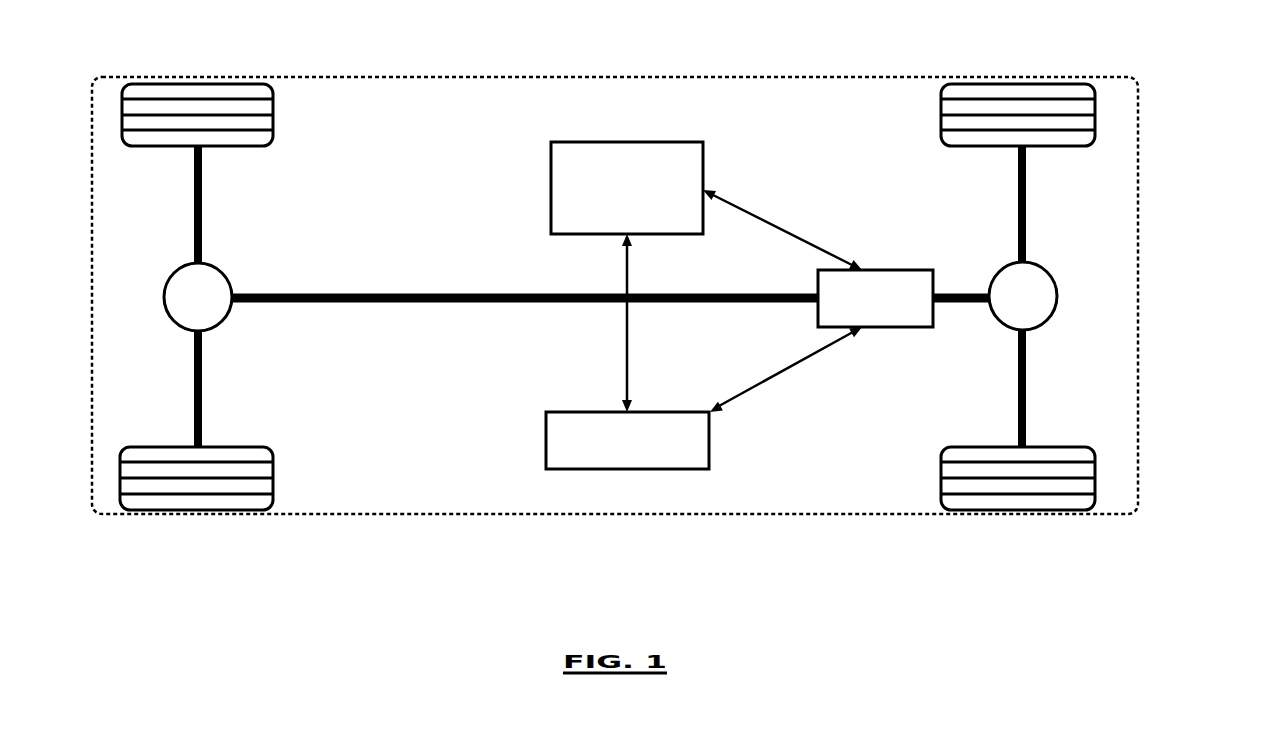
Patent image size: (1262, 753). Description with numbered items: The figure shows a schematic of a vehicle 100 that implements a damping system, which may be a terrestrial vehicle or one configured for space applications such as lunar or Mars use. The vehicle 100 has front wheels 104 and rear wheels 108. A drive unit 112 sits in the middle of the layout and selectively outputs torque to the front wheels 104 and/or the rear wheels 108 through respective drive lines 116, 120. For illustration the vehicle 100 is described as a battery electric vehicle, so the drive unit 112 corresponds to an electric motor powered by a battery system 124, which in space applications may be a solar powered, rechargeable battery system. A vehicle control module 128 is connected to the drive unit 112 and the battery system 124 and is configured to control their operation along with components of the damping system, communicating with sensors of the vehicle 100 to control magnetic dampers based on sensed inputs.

The vehicle 100 is at (1177, 124).
The front wheels 104 is at (1000, 84).
The rear wheels 108 is at (170, 84).
The drive unit 112 is at (880, 328).
The drive line 116 is at (1058, 295).
The drive line 120 is at (171, 276).
The battery system 124 is at (680, 142).
The vehicle control module 128 is at (645, 470).